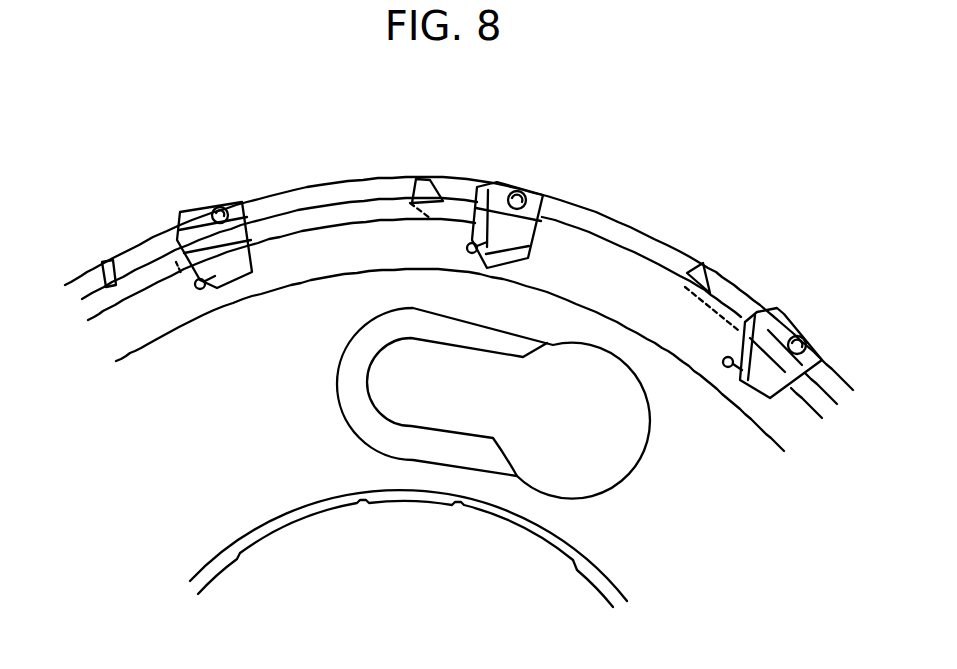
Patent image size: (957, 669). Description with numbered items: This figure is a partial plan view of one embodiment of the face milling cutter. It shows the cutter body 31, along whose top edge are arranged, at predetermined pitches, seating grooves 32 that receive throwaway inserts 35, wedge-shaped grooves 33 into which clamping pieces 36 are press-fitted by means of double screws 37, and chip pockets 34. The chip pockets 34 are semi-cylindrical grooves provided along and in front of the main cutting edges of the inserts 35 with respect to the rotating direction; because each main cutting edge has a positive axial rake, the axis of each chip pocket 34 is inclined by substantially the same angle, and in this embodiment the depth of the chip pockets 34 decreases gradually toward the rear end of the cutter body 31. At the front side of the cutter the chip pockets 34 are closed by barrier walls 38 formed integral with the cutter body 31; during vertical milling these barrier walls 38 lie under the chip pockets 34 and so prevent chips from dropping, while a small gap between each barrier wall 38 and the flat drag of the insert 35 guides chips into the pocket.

The cutter body 31 is at (642, 233).
The seating groove 32 is at (733, 370).
The wedge-shaped groove 33 is at (760, 407).
The chip pocket 34 is at (423, 178).
The throwaway insert 35 is at (490, 179).
The clamping piece 36 is at (540, 220).
The double screw 37 is at (527, 195).
The barrier wall 38 is at (440, 212).